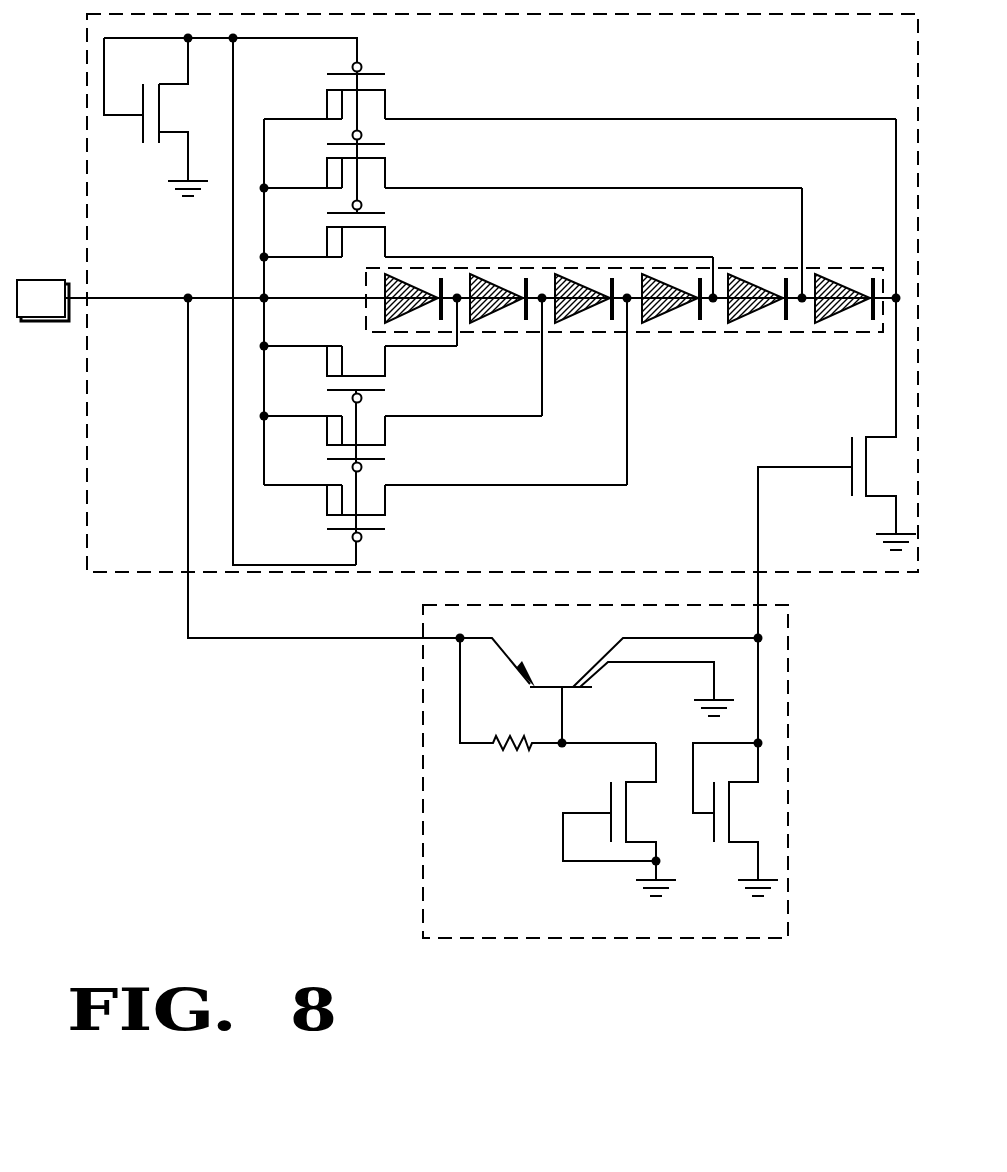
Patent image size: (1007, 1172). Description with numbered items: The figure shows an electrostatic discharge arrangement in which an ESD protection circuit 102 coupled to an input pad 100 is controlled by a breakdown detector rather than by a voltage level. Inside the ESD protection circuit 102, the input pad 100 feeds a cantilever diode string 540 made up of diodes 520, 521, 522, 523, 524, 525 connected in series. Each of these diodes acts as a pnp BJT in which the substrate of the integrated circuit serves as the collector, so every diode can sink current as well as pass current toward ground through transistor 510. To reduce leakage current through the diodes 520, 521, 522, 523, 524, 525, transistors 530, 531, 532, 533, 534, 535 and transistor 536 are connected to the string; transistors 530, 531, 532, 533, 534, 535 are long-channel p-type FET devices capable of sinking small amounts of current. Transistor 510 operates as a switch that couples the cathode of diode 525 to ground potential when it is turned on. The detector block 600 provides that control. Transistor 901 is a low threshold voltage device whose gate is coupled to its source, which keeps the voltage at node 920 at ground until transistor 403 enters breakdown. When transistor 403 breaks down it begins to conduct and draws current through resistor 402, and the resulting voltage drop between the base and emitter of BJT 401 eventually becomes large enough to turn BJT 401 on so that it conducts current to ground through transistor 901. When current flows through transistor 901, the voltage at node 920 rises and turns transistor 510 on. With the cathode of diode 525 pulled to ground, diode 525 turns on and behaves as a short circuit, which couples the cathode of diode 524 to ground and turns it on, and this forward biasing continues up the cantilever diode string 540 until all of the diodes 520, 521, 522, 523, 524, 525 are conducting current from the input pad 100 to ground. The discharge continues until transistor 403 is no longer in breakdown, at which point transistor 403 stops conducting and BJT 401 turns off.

The input pad 100 is at (38, 280).
The ESD protection circuit 102 is at (905, 52).
The transistor 510 is at (905, 476).
The diode 520 is at (383, 290).
The diode 521 is at (488, 318).
The diode 522 is at (573, 318).
The diode 523 is at (658, 318).
The diode 524 is at (743, 318).
The diode 525 is at (830, 318).
The transistor 530 is at (387, 358).
The transistor 531 is at (387, 428).
The transistor 532 is at (387, 497).
The transistor 533 is at (387, 244).
The transistor 534 is at (387, 176).
The transistor 535 is at (387, 108).
The transistor 536 is at (198, 122).
The cantilever diode string 540 is at (836, 267).
The BJT 401 is at (577, 679).
The resistor 402 is at (529, 774).
The transistor 403 is at (667, 824).
The breakdown detector circuit 600 is at (769, 934).
The transistor 901 is at (769, 824).
The node 920 is at (762, 636).